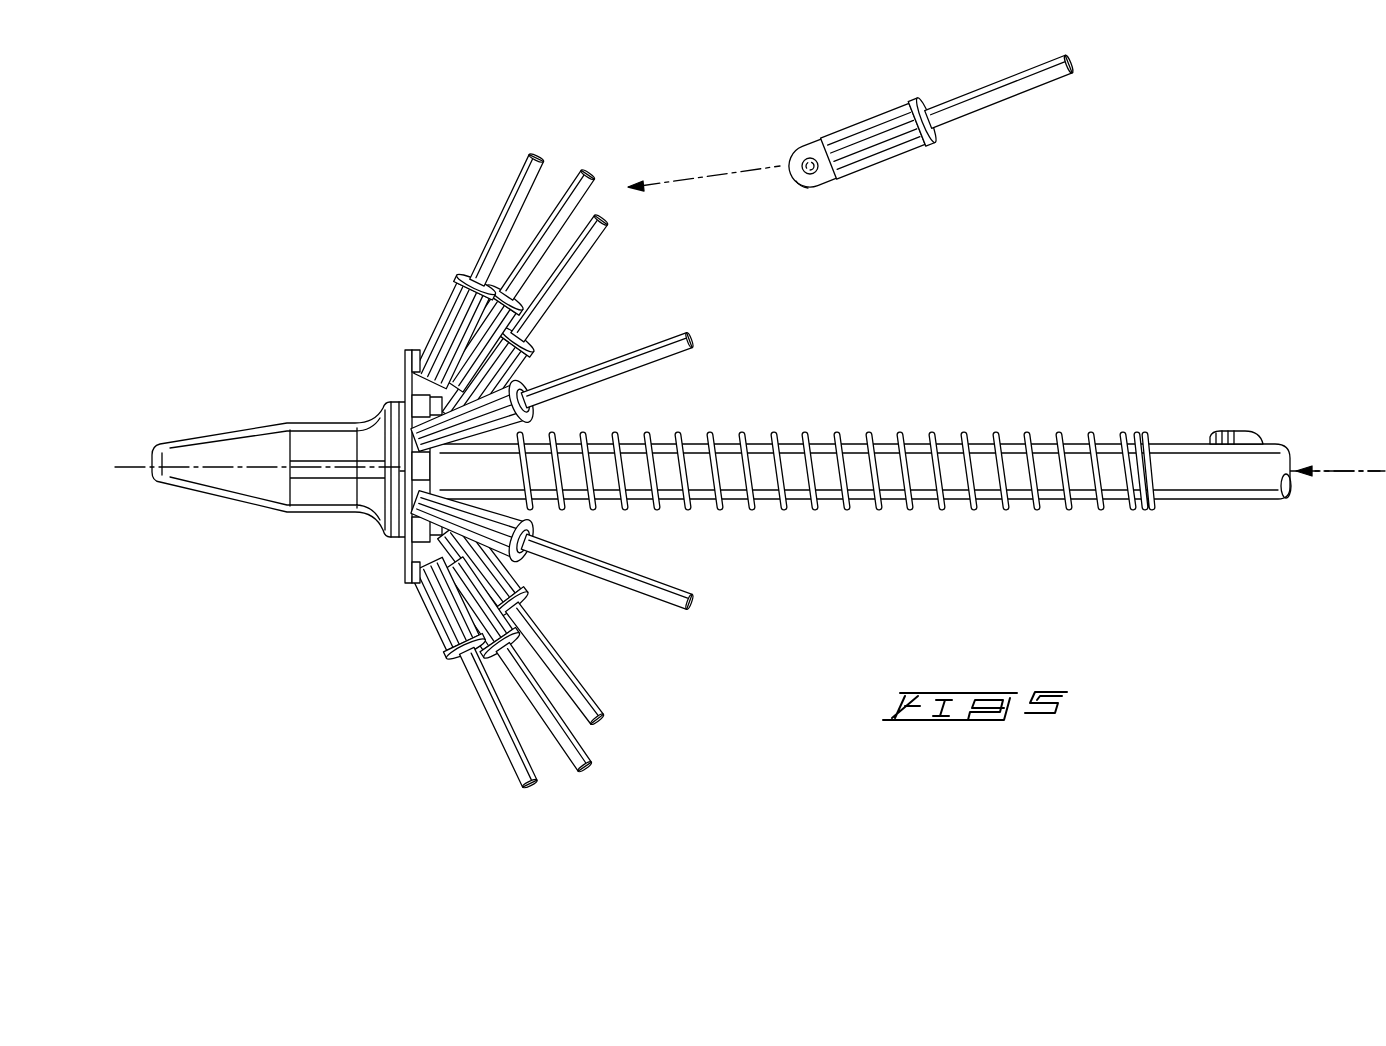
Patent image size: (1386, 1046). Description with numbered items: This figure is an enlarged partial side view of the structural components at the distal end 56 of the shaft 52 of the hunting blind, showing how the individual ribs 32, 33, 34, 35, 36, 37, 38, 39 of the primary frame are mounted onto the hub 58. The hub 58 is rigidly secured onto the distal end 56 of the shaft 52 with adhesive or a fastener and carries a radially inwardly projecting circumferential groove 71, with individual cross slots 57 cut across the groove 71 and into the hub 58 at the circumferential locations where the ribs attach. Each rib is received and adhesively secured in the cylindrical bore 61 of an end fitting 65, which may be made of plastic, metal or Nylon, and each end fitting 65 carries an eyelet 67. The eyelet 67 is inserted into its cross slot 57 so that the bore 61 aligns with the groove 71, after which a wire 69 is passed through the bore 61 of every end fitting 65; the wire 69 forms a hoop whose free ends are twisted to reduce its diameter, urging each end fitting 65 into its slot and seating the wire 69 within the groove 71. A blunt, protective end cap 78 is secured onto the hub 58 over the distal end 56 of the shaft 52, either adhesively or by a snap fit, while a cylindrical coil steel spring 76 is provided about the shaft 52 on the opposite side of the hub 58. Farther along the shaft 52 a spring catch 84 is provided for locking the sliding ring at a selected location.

The rib 32 is at (585, 187).
The rib 33 is at (515, 190).
The rib 34 is at (578, 245).
The rib 35 is at (575, 692).
The rib 36 is at (510, 752).
The rib 37 is at (572, 775).
The rib 38 is at (660, 582).
The rib 39 is at (655, 366).
The shaft 52 is at (1170, 452).
The distal end 56 is at (322, 314).
The cross slot 57 is at (400, 393).
The hub 58 is at (405, 395).
The cylindrical bore 61 is at (810, 172).
The end fitting 65 is at (850, 125).
The eyelet 67 is at (820, 190).
The wire 69 is at (428, 462).
The circumferential groove 71 is at (412, 545).
The coil spring 76 is at (805, 433).
The end cap 78 is at (207, 504).
The spring catch 84 is at (1243, 431).